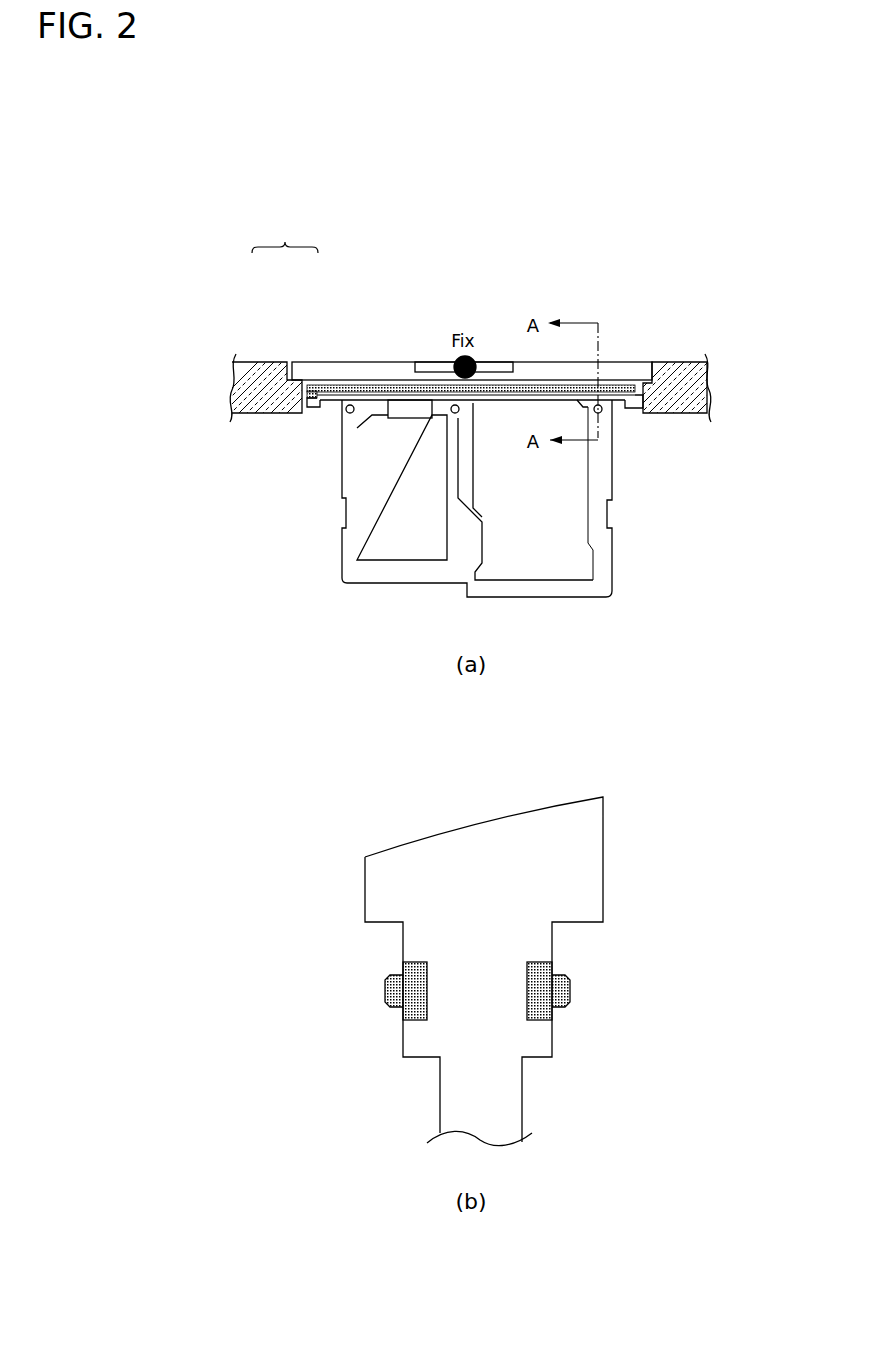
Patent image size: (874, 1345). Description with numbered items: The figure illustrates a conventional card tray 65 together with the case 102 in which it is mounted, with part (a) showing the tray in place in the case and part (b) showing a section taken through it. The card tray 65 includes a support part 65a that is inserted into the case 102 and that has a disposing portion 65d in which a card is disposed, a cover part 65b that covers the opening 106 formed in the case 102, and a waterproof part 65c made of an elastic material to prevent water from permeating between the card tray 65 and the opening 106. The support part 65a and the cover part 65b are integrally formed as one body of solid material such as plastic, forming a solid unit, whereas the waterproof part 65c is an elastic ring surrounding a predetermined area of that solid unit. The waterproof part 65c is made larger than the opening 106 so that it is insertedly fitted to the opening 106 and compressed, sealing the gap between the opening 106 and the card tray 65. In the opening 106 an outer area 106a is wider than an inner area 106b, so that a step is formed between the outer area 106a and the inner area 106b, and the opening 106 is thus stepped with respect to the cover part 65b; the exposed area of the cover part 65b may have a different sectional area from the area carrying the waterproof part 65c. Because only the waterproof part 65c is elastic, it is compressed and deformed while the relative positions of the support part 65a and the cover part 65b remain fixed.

The case 102 is at (665, 372).
The opening 106 is at (285, 234).
The outer area 106a is at (290, 363).
The inner area 106b is at (309, 383).
The card tray 65 is at (623, 562).
The support part 65a is at (602, 478).
The cover part 65b is at (403, 368).
The waterproof part 65c is at (368, 392).
The disposing portion 65d is at (567, 513).